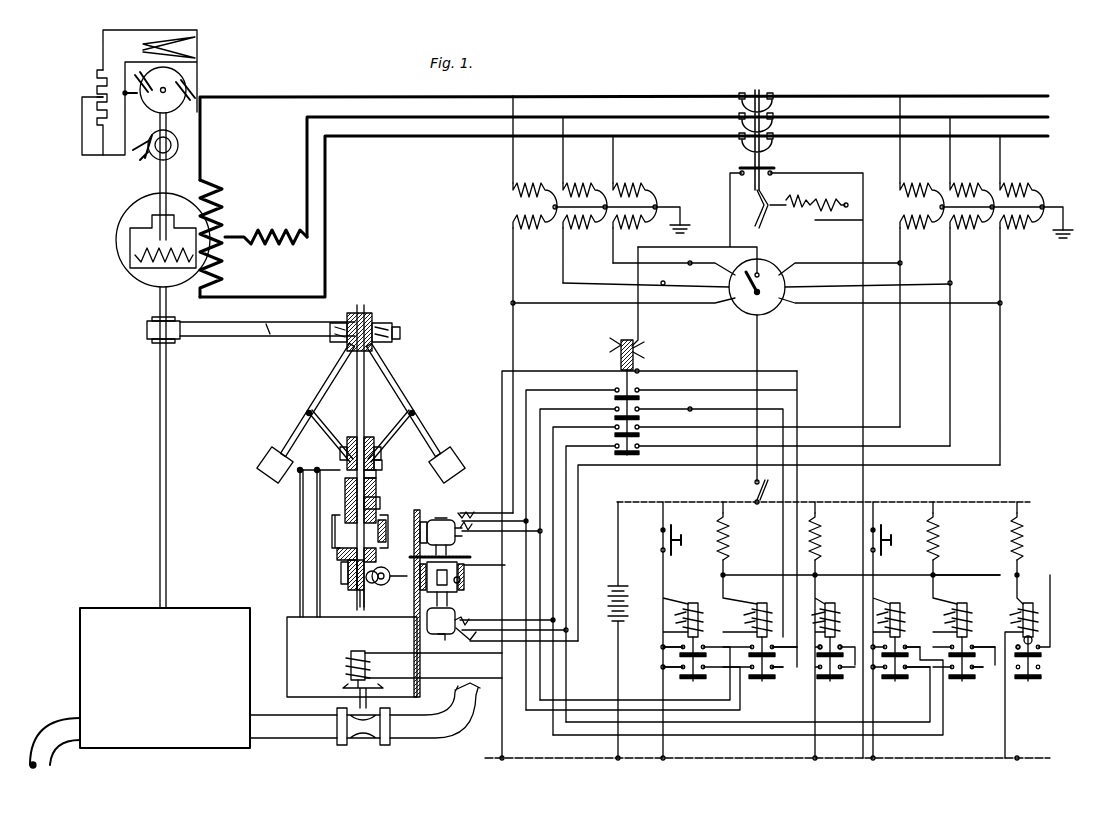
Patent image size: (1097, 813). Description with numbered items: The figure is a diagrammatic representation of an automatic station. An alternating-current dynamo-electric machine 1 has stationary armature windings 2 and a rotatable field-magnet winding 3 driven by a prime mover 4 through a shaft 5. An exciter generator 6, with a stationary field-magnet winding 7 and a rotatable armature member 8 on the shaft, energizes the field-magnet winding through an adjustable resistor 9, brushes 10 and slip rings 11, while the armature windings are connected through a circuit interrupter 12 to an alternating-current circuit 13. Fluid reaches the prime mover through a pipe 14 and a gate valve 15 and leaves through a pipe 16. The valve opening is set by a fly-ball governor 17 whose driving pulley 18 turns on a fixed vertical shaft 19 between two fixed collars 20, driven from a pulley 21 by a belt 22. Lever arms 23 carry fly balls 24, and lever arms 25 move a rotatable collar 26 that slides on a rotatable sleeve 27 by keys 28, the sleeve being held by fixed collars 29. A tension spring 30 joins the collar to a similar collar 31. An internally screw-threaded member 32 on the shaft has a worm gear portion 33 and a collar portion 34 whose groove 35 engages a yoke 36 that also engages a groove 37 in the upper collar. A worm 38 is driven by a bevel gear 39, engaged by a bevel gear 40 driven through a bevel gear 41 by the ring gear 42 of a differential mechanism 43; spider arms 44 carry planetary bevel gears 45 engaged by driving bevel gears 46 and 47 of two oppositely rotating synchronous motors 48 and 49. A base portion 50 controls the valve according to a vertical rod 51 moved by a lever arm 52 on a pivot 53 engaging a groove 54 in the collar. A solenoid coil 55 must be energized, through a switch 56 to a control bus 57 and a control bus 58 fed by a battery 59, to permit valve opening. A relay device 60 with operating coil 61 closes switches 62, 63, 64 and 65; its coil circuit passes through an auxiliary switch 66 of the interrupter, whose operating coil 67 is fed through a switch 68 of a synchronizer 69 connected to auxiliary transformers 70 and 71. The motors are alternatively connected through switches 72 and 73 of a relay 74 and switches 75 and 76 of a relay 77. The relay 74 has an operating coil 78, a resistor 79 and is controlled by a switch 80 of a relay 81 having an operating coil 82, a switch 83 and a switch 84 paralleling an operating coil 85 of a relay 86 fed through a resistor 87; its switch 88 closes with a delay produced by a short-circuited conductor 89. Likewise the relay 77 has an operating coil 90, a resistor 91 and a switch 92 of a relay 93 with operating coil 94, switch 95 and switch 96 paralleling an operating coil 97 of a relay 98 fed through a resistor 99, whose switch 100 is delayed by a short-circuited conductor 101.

The alternating-current dynamo-electric machine 1 is at (97, 273).
The stationary armature windings 2 is at (240, 230).
The rotatable field-magnet winding 3 is at (165, 265).
The prime mover 4 is at (172, 682).
The shaft 5 is at (158, 479).
The exciter generator 6 is at (141, 121).
The stationary field-magnet winding 7 is at (143, 47).
The rotatable armature member 8 is at (186, 75).
The adjustable resistor 9 is at (92, 82).
The brushes 10 is at (140, 160).
The slip rings 11 is at (178, 143).
The circuit interrupter 12 is at (799, 157).
The alternating-current circuit 13 is at (825, 130).
The pipe or conduit 14 is at (470, 708).
The gate valve 15 is at (362, 745).
The pipe or conduit 16 is at (60, 757).
The fly-ball governor 17 is at (268, 552).
The driving pulley 18 is at (390, 322).
The fixed vertical shaft 19 is at (358, 305).
The fixed collars 20 is at (372, 320).
The pulley 21 is at (150, 345).
The belt 22 is at (232, 338).
The lever arms 23 is at (318, 376).
The weights or fly balls 24 is at (262, 457).
The lever arms 25 is at (322, 412).
The rotatable collar 26 is at (383, 465).
The rotatable sleeve 27 is at (376, 437).
The keys or splines 28 is at (340, 452).
The fixed collars 29 is at (348, 437).
The tension spring 30 is at (378, 489).
The collar 31 is at (382, 500).
The internally screw-threaded member 32 is at (347, 574).
The worm gear portion 33 is at (341, 585).
The collar portion 34 is at (388, 541).
The annular groove or depression 35 is at (378, 553).
The yoke 36 is at (333, 524).
The annular groove or depression 37 is at (395, 518).
The worm 38 is at (373, 591).
The bevel gear 39 is at (377, 606).
The bevel gear 40 is at (386, 584).
The bevel gear 41 is at (413, 600).
The ring gear 42 is at (466, 557).
The differential mechanism 43 is at (488, 585).
The spider arms 44 is at (493, 565).
The planetary bevel gears 45 is at (460, 590).
The driving bevel gear 46 is at (458, 549).
The driving bevel gear 47 is at (450, 598).
The synchronous electric motor 48 is at (445, 530).
The synchronous electric motor 49 is at (427, 625).
The base portion 50 is at (287, 672).
The vertical rod 51 is at (298, 587).
The lever arm 52 is at (297, 485).
The pivot 53 is at (317, 480).
The annular groove or depression 54 is at (378, 475).
The electromagnet or solenoid coil 55 is at (350, 660).
The switch 56 is at (755, 487).
The control bus 57 is at (662, 495).
The control bus 58 is at (587, 760).
The battery 59 is at (605, 612).
The relay device 60 is at (608, 361).
The operating coil 61 is at (640, 350).
The switch 62 is at (641, 399).
The switch 63 is at (641, 418).
The switch 64 is at (641, 435).
The switch 65 is at (641, 453).
The auxiliary switch 66 is at (738, 166).
The operating coil 67 is at (790, 212).
The switch 68 is at (762, 285).
The synchronizer 69 is at (770, 312).
The auxiliary transformer 70 is at (506, 218).
The auxiliary transformer 71 is at (892, 213).
The switch 72 is at (776, 655).
The switch 73 is at (778, 676).
The relay 74 is at (776, 697).
The switch 75 is at (976, 654).
The switch 76 is at (978, 672).
The relay 77 is at (969, 697).
The operating coil 78 is at (736, 614).
The resistor 79 is at (733, 532).
The switch 80 is at (672, 672).
The relay 81 is at (702, 697).
The operating coil 82 is at (667, 614).
The switch 83 is at (680, 532).
The switch 84 is at (670, 650).
The operating coil 85 is at (812, 614).
The relay 86 is at (827, 630).
The resistor 87 is at (824, 527).
The switch 88 is at (814, 647).
The short-circuited conductor 89 is at (841, 647).
The operating coil 90 is at (941, 614).
The resistor 91 is at (943, 531).
The switch 92 is at (912, 675).
The relay 93 is at (902, 699).
The operating coil 94 is at (875, 613).
The switch 95 is at (889, 531).
The switch 96 is at (908, 649).
The operating coil 97 is at (1008, 613).
The relay 98 is at (1036, 691).
The resistor 99 is at (1027, 535).
The switch 100 is at (1016, 645).
The short-circuited conductor 101 is at (1035, 640).